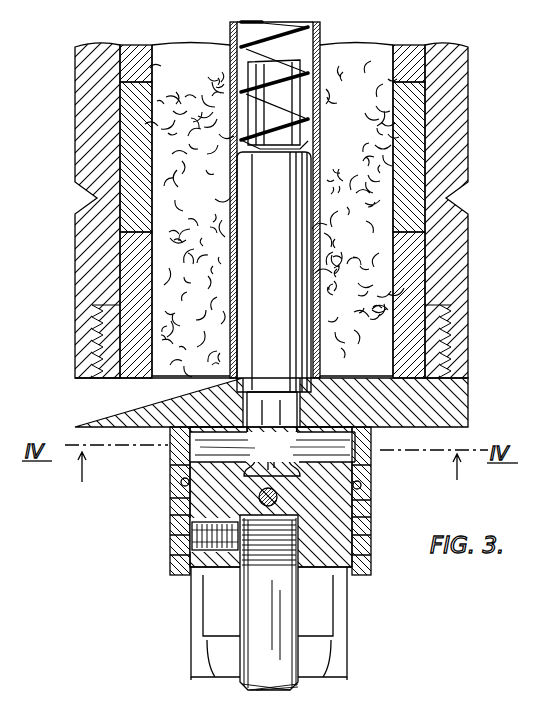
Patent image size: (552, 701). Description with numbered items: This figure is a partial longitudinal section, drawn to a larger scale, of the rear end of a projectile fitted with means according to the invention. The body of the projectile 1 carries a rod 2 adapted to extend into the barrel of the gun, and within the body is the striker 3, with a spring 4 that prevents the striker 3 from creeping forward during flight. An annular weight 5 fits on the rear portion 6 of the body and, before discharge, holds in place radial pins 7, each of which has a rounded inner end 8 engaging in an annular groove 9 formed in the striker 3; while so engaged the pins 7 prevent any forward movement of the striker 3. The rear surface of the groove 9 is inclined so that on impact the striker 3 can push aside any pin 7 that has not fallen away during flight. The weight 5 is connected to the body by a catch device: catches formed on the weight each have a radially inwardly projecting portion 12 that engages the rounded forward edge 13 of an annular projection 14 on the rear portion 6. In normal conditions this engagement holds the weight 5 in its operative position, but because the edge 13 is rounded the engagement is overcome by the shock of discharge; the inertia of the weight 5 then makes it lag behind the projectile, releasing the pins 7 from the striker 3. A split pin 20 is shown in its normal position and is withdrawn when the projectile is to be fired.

The body of the projectile 1 is at (455, 118).
The rod 2 is at (273, 620).
The striker 3 is at (274, 272).
The spring 4 is at (300, 31).
The weight 5 is at (355, 538).
The rear portion of the body 6 is at (353, 558).
The radial pins 7 is at (192, 437).
The rounded inner end 8 is at (183, 484).
The annular groove 9 is at (261, 432).
The radially inwardly projecting portion 12 is at (198, 447).
The forward edge 13 is at (190, 462).
The annular projection 14 is at (190, 500).
The split pin 20 is at (262, 494).